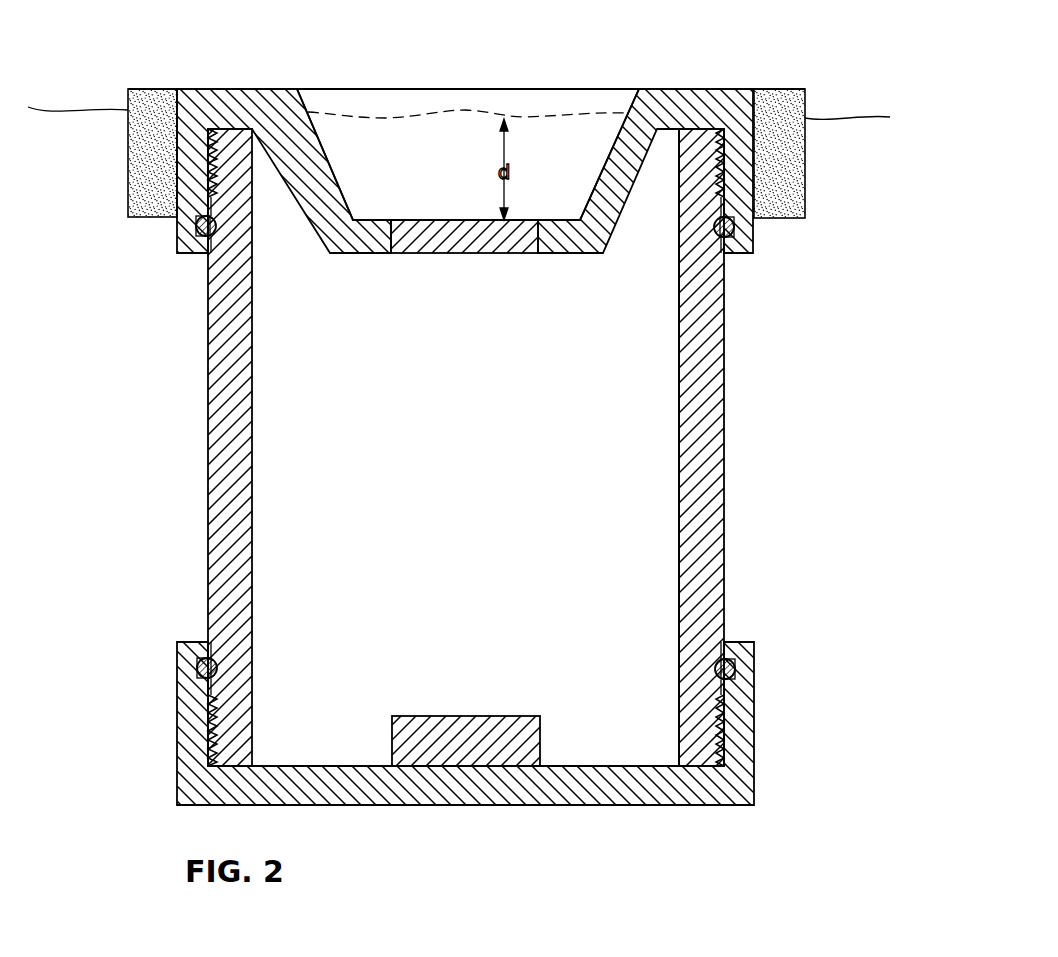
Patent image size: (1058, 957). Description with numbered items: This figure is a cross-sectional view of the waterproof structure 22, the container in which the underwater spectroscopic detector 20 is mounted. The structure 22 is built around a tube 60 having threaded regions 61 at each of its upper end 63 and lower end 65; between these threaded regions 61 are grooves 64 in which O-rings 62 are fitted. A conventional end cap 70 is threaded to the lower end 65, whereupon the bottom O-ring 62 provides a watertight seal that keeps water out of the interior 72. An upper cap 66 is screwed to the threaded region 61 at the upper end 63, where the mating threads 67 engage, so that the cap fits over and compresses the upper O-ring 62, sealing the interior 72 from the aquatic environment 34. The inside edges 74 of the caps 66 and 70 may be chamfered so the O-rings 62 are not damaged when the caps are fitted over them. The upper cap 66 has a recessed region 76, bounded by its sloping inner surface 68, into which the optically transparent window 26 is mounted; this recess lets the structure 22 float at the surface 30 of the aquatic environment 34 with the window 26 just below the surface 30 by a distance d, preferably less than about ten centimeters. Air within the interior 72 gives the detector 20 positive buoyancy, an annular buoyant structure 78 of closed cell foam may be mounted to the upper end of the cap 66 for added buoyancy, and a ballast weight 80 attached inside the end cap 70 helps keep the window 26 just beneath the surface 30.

The detector 20 is at (160, 457).
The waterproof structure 22 is at (723, 466).
The optically transparent window 26 is at (478, 255).
The surface 30 is at (866, 118).
The aquatic environment 34 is at (880, 169).
The tube 60 is at (708, 422).
The threaded region 61 is at (725, 716).
The O-ring 62 is at (735, 236).
The upper end 63 is at (703, 128).
The groove 64 is at (715, 225).
The lower end 65 is at (695, 767).
The upper cap 66 is at (727, 92).
The upper threads of housing 67 is at (718, 190).
The funnel inner surface 68 is at (368, 218).
The end cap 70 is at (754, 748).
The interior 72 is at (452, 457).
The inside edge 74 is at (200, 262).
The recessed region 76 is at (322, 148).
The buoyant structure 78 is at (128, 170).
The ballast weight 80 is at (462, 716).